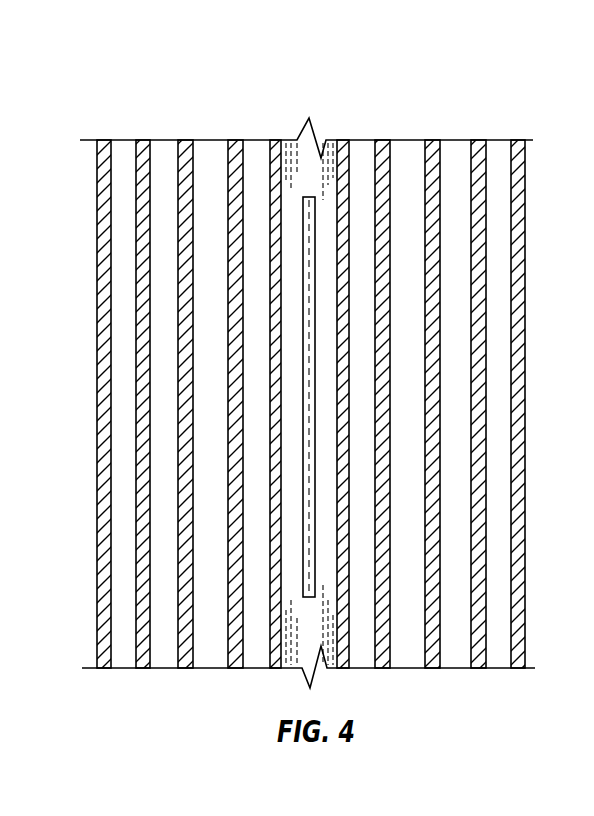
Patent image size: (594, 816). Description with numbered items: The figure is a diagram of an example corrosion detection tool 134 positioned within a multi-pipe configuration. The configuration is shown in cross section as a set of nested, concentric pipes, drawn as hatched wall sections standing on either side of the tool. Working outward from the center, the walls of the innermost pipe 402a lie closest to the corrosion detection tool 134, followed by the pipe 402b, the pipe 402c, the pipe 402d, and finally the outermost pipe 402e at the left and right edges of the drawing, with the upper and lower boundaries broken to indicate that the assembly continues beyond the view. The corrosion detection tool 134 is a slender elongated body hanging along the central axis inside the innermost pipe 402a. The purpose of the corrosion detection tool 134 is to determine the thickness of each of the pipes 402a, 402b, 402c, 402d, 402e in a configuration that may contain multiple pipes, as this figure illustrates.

The pipe 402a is at (275, 142).
The pipe 402b is at (235, 142).
The pipe 402c is at (185, 142).
The pipe 402d is at (142, 142).
The pipe 402e is at (102, 142).
The corrosion detection tool 134 is at (303, 208).